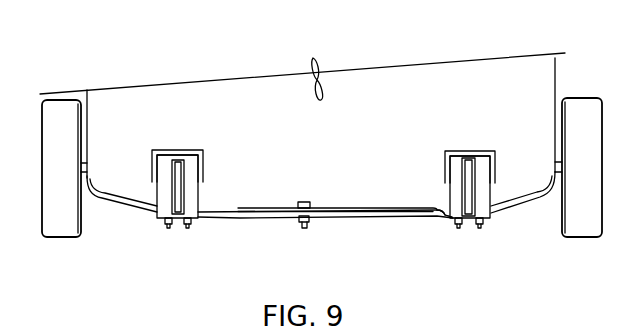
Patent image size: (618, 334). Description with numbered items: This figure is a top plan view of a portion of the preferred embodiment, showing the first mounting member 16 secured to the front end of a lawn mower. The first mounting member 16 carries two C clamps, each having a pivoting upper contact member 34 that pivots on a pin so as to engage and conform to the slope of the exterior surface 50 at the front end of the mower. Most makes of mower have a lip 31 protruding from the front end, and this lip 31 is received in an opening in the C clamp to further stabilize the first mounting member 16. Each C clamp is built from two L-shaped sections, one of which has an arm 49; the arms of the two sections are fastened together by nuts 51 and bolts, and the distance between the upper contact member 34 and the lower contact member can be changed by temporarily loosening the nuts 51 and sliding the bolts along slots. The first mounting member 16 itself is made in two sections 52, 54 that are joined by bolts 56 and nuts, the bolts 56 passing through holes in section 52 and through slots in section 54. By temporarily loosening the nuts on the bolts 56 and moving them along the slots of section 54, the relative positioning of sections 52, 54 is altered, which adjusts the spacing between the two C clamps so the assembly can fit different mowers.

The exterior surface 50 is at (379, 98).
The lip 31 is at (133, 212).
The upper contact member 34 is at (177, 153).
The arm 49 is at (165, 199).
The first mounting member 16 is at (185, 200).
The section 54 is at (232, 219).
The bolts 56 is at (303, 201).
The nuts 51 is at (184, 229).
The section 52 is at (446, 221).